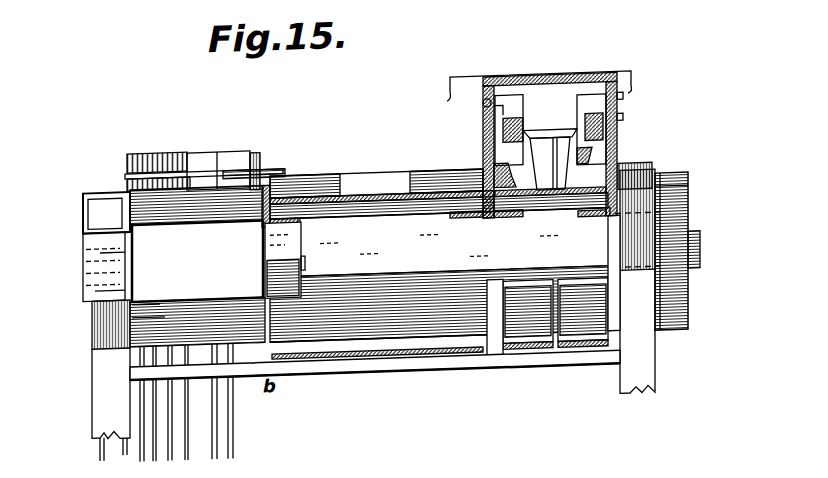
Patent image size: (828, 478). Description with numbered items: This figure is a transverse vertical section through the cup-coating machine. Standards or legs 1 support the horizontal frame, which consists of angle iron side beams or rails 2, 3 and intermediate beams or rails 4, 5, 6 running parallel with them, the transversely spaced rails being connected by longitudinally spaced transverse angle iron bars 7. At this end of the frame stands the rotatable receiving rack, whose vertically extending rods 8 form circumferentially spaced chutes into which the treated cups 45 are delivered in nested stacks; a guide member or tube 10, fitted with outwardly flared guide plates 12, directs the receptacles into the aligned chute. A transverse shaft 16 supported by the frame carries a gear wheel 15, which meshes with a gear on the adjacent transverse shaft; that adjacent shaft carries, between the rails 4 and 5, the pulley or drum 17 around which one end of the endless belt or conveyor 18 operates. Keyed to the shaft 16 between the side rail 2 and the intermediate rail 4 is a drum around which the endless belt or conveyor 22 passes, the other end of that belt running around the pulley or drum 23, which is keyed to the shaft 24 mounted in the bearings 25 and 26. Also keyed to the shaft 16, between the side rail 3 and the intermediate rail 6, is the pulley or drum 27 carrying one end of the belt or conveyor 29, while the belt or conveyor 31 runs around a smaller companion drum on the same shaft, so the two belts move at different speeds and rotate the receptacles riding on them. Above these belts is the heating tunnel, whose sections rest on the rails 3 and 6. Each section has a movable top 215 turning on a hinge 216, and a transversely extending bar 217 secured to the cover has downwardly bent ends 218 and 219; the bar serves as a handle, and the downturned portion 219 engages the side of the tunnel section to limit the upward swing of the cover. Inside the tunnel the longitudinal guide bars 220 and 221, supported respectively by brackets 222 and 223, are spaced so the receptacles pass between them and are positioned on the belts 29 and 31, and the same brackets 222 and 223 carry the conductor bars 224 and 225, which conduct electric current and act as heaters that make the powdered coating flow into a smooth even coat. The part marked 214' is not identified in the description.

The standards or legs 1 is at (100, 424).
The angle iron side beam or rail 2 is at (130, 210).
The angle iron side beam or rail 3 is at (578, 232).
The intermediate beam or rail 4 is at (271, 201).
The intermediate beam or rail 5 is at (462, 230).
The intermediate beam or rail 6 is at (503, 231).
The transversely extending angle iron bars 7 is at (390, 277).
The vertically extending rods 8 is at (212, 437).
The guide member or tube 10 is at (193, 165).
The outwardly flared guide plates 12 is at (157, 161).
The gear wheel 15 is at (690, 320).
The shaft 16 is at (700, 286).
The pulley or drum 17 is at (325, 322).
The endless belt or conveyor 18 is at (340, 205).
The endless belt or conveyor 22 is at (155, 319).
The pulley or drum 23 is at (150, 309).
The shaft 24 is at (95, 287).
The bearing 25 is at (100, 257).
The bearing 26 is at (283, 251).
The pulley or drum 27 is at (503, 300).
The belt or conveyor 29 is at (530, 218).
The belt or conveyor 31 is at (572, 231).
The cups 45 is at (688, 204).
The bracket 214' is at (540, 62).
The movable top 215 is at (547, 89).
The hinge 216 is at (623, 118).
The transversely extending bar 217 is at (591, 89).
The downwardly bent end 218 is at (450, 106).
The downwardly turned portion 219 is at (633, 94).
The guide bar 220 is at (497, 182).
The guide bar 221 is at (592, 166).
The bracket 222 is at (487, 185).
The bracket 223 is at (617, 187).
The conductor bar 224 is at (523, 148).
The conductor bar 225 is at (583, 140).